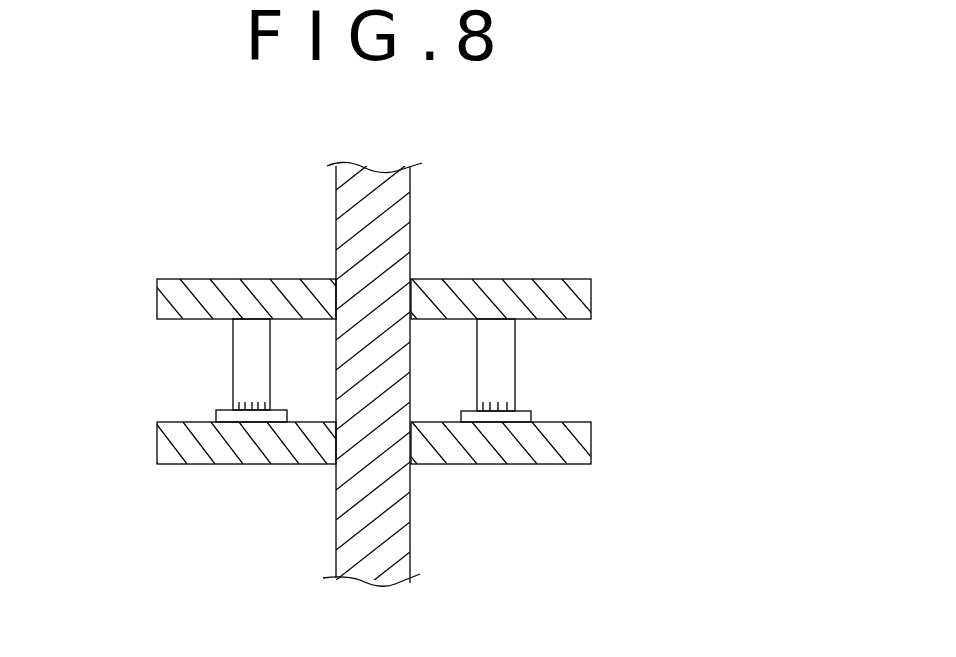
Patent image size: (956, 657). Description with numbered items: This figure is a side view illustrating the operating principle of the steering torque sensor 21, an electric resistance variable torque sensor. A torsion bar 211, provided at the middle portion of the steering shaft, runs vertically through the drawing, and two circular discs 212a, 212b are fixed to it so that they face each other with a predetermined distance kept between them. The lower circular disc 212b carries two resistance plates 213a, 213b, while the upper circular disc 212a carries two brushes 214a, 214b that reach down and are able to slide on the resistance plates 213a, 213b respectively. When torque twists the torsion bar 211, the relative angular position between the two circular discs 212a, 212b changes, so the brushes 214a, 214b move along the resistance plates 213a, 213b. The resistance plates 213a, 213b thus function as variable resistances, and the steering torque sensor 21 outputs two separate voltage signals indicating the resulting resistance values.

The steering torque sensor 21 is at (605, 188).
The torsion bar 211 is at (411, 204).
The circular disc 212a is at (591, 300).
The circular disc 212b is at (591, 443).
The resistance plate 213a is at (215, 418).
The resistance plate 213b is at (531, 418).
The brush 214a is at (233, 347).
The brush 214b is at (515, 347).